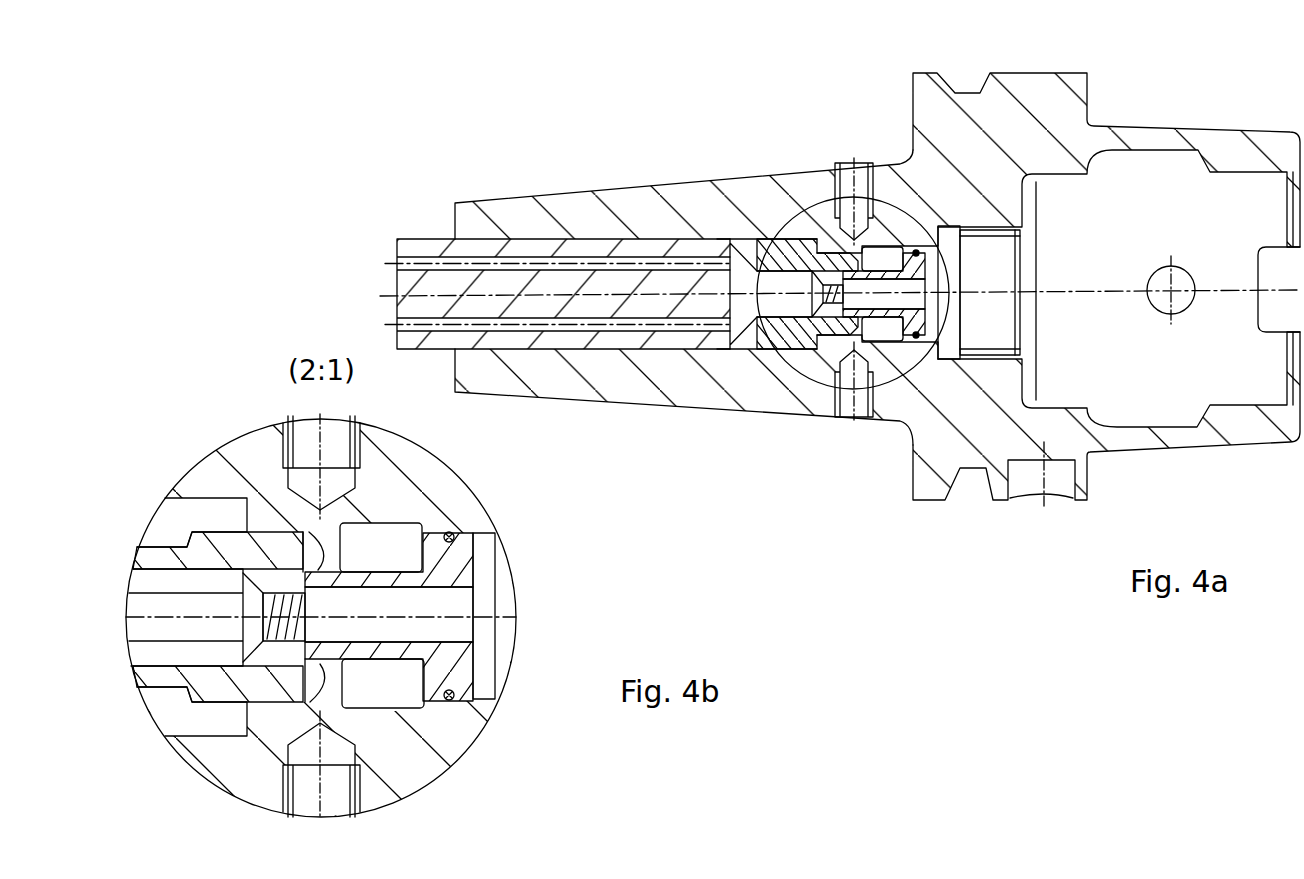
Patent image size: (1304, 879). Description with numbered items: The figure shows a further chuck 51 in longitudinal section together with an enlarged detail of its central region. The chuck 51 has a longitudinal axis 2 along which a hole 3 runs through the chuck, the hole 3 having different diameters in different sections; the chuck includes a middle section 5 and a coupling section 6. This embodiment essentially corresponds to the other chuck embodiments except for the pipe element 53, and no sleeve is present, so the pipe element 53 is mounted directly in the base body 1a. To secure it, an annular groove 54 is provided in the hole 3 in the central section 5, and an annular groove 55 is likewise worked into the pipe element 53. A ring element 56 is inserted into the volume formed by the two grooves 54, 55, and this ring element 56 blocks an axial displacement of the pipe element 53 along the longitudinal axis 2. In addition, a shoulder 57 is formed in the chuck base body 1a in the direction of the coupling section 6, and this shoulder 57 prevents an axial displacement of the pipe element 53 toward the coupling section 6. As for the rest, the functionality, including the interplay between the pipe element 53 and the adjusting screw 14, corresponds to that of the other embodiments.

In FIG. 4A, the base body 1a is at (1000, 175).
In FIG. 4B, the base body 1a is at (422, 488).
In FIG. 4A, the longitudinal axis 2 is at (428, 293).
In FIG. 4B, the longitudinal axis 2 is at (488, 610).
In FIG. 4A, the hole 3 is at (1065, 265).
In FIG. 4A, the middle section 5 is at (927, 166).
In FIG. 4A, the coupling section 6 is at (1220, 152).
In FIG. 4A, the adjusting screw 14 is at (822, 328).
In FIG. 4B, the adjusting screw 14 is at (217, 553).
In FIG. 4A, the chuck 51 is at (548, 170).
In FIG. 4B, the pipe element 53 is at (322, 577).
In FIG. 4A, the annular groove 54 is at (924, 250).
In FIG. 4B, the annular groove 54 is at (450, 532).
In FIG. 4B, the annular groove 55 is at (440, 530).
In FIG. 4B, the ring element 56 is at (470, 667).
In FIG. 4B, the shoulder 57 is at (452, 697).